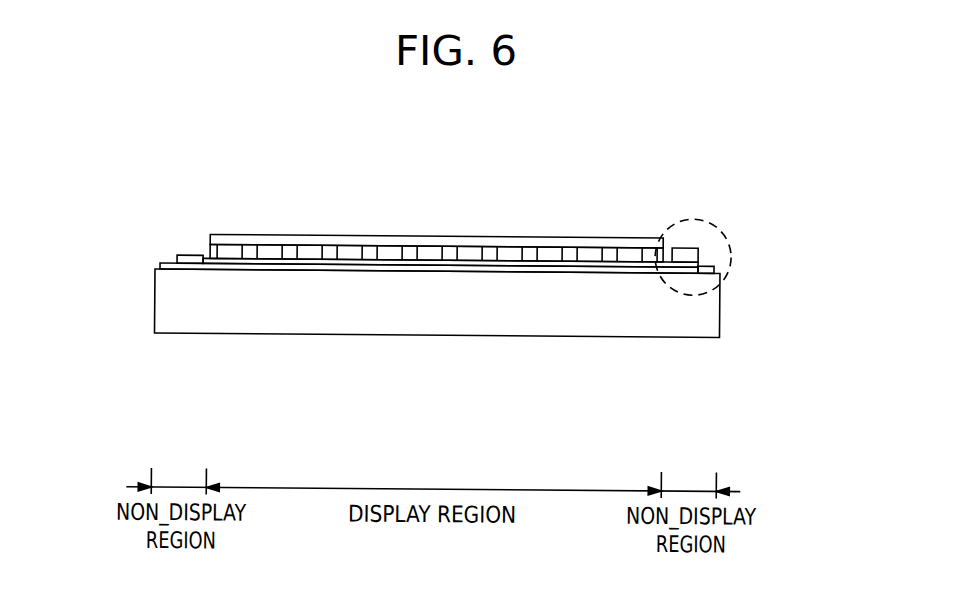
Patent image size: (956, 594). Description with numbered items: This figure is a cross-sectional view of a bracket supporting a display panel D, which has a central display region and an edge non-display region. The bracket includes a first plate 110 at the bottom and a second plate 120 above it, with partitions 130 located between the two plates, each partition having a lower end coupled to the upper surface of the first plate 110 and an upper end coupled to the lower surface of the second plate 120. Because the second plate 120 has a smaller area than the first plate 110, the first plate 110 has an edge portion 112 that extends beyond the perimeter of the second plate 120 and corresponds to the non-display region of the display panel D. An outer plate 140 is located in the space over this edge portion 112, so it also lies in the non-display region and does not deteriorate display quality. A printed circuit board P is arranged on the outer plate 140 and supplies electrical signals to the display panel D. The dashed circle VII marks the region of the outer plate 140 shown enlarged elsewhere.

The first plate 110 is at (437, 269).
The edge portion 112 is at (200, 266).
The second plate 120 is at (435, 234).
The partitions 130 is at (207, 252).
The outer plate 140 is at (700, 270).
The printed circuit board P is at (684, 244).
The enlarged region VII is at (725, 240).
The display panel D is at (159, 306).